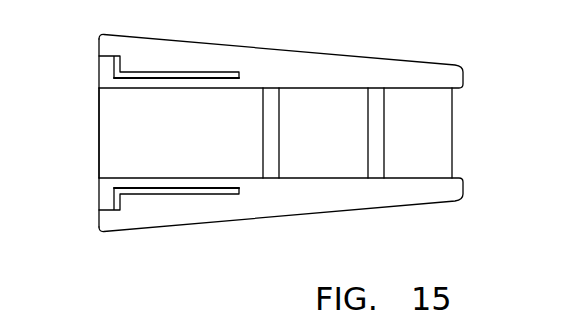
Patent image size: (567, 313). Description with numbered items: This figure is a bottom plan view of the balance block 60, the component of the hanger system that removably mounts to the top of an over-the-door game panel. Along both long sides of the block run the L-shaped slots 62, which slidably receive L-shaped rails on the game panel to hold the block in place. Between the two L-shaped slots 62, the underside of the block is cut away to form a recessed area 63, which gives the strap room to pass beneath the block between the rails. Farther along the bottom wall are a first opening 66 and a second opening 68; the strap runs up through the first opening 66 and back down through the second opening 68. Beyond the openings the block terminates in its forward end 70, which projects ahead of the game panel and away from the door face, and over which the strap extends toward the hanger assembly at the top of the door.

The balance block 60 is at (310, 51).
The L-shaped slots 62 is at (151, 90).
The recessed area 63 is at (108, 132).
The first opening 66 is at (276, 135).
The second opening 68 is at (378, 123).
The forward end 70 is at (453, 130).